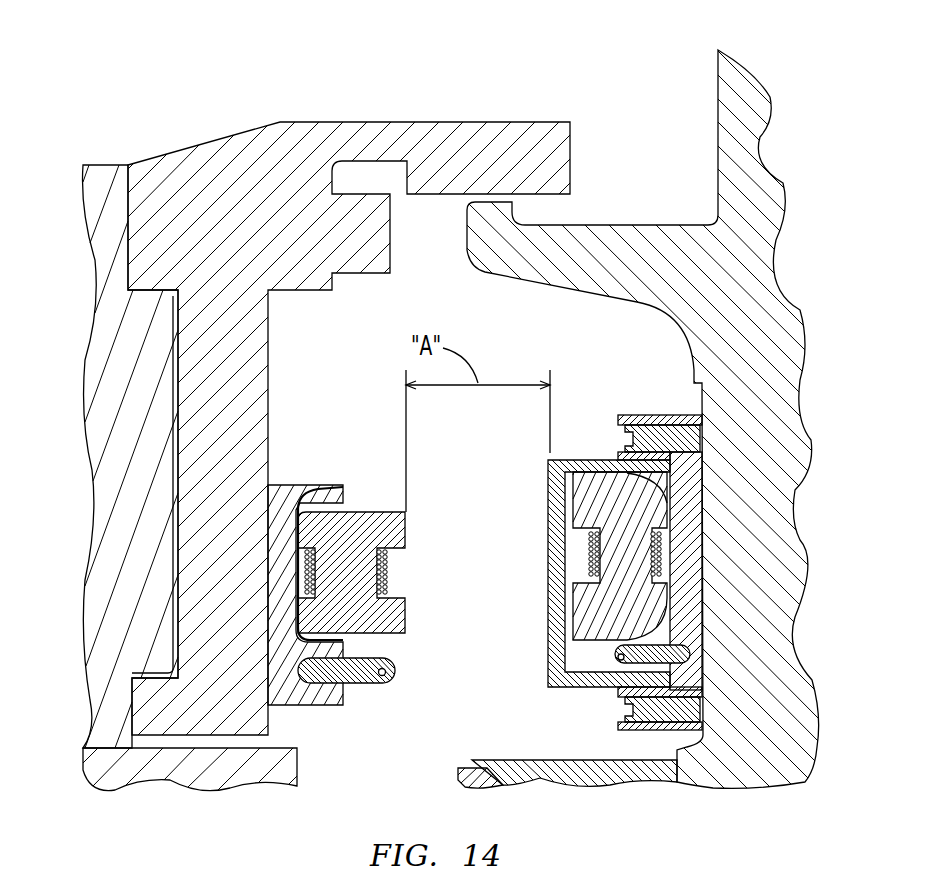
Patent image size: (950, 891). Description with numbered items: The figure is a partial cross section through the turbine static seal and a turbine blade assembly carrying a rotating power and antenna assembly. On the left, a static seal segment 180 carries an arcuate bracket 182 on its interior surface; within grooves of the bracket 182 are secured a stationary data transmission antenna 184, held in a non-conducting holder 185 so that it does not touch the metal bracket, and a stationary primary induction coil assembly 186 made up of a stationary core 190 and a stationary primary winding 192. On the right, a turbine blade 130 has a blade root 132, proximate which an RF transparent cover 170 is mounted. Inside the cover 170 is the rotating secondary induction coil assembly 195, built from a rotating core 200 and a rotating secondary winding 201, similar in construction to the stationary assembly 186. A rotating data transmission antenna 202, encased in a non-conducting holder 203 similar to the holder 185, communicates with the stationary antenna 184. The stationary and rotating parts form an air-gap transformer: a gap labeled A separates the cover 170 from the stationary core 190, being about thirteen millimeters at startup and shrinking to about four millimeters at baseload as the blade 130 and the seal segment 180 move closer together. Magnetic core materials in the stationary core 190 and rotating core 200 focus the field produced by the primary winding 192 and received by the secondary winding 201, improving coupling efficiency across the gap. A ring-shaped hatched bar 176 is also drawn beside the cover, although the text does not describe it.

The turbine blade 130 is at (742, 302).
The turbine engine blade root 132 is at (748, 717).
The RF transparent cover 170 is at (548, 483).
The support bar 176 is at (683, 602).
The static seal segment 180 is at (243, 192).
The arcuate bracket 182 is at (287, 650).
The stationary data transmission antenna 184 is at (382, 676).
The non-conducting holder 185 is at (362, 672).
The primary induction coil assembly 186 is at (413, 625).
The stationary core 190 is at (360, 525).
The stationary primary winding 192 is at (385, 575).
The rotating secondary induction coil assembly 195 is at (590, 643).
The rotating core 200 is at (636, 512).
The rotating secondary winding 201 is at (590, 546).
The rotating data transmission antenna 202 is at (615, 658).
The non-conducting holder 203 is at (693, 650).